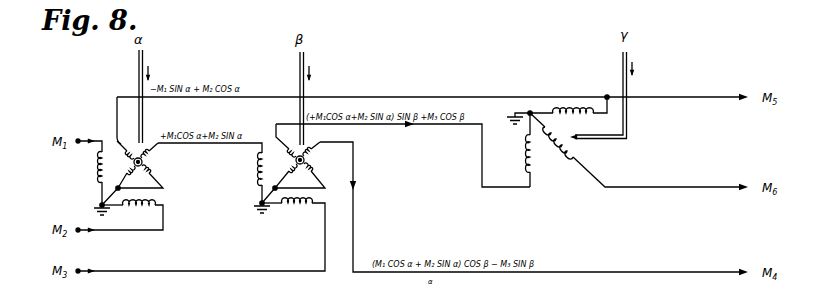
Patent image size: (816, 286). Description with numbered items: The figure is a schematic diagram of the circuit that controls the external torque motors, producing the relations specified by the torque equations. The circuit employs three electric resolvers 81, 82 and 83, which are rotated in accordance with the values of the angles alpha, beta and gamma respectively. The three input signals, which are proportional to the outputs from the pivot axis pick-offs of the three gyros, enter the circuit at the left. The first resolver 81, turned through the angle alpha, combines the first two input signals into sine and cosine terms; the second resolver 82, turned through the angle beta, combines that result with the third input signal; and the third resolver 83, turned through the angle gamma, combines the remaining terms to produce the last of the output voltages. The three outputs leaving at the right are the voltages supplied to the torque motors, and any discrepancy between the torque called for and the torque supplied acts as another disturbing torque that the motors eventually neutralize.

The electric resolver 81 is at (162, 163).
The electric resolver 82 is at (326, 163).
The electric resolver 83 is at (557, 168).